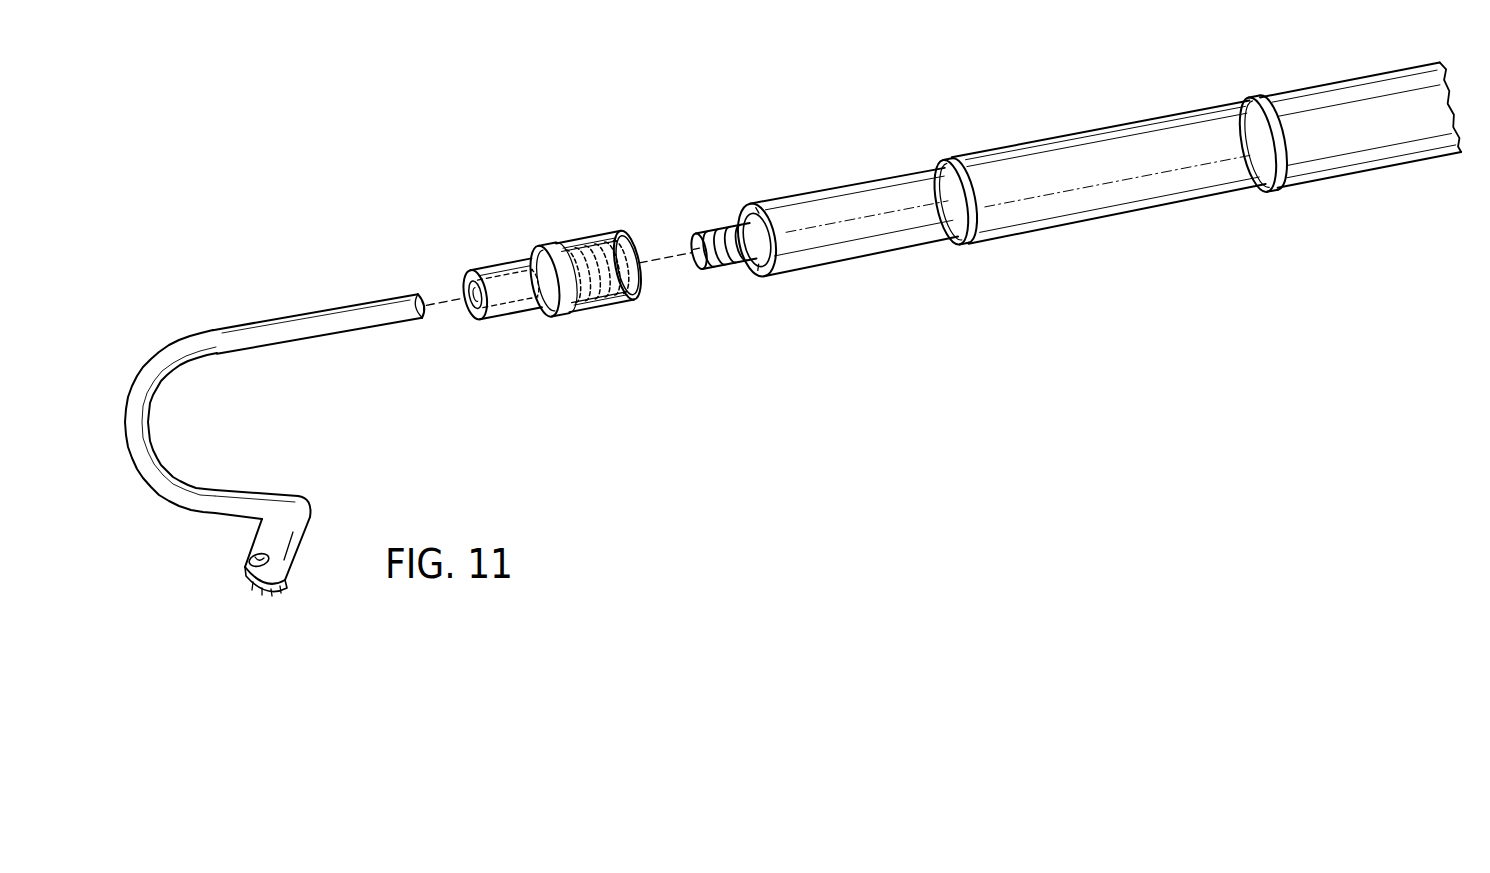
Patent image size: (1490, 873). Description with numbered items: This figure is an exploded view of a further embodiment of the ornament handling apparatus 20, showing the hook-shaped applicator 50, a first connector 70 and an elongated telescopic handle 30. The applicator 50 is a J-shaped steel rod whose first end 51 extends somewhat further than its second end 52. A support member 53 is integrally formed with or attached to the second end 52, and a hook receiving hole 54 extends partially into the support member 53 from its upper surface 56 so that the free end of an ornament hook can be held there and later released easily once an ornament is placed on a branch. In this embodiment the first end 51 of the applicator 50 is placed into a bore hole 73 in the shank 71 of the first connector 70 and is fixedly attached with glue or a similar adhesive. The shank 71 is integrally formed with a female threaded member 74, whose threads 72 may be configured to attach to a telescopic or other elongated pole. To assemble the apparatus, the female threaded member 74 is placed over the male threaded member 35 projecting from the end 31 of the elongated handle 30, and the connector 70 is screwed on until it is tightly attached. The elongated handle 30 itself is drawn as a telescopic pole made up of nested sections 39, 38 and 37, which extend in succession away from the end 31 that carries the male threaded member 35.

The extension pole tool assembly 20 is at (982, 94).
The elongated handle 30 is at (1135, 248).
The end of the elongated handle 31 is at (757, 267).
The male threaded member 35 is at (730, 220).
The outer pole section 37 is at (1323, 88).
The middle pole section 38 is at (1063, 147).
The inner pole section 39 is at (822, 200).
The hook-shaped applicator 50 is at (165, 357).
The first end of the applicator 51 is at (411, 292).
The second end of the applicator 52 is at (283, 498).
The support member 53 is at (296, 553).
The hook receiving hole 54 is at (245, 563).
The upper surface of the support member 56 is at (268, 540).
The first connector 70 is at (547, 309).
The shank 71 is at (502, 264).
The threads 72 is at (593, 292).
The bore hole 73 is at (464, 315).
The female threaded member 74 is at (578, 242).